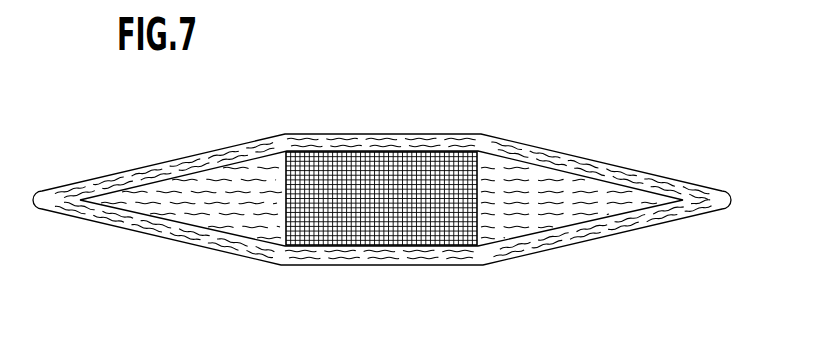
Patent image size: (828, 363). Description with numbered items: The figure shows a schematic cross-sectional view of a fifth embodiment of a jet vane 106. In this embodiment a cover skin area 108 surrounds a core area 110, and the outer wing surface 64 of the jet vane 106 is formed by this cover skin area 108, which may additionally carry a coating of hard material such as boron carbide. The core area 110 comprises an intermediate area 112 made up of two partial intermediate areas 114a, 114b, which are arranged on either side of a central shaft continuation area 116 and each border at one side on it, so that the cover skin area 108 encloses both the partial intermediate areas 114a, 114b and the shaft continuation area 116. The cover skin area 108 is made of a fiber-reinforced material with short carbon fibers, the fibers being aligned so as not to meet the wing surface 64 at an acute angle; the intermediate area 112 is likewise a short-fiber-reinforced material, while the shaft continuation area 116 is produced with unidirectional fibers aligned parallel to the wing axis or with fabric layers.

The jet vane 106 is at (408, 101).
The wing surface 64 is at (100, 181).
The cover skin area 108 is at (647, 182).
The core area 110 is at (485, 238).
The intermediate area 112 is at (166, 239).
The partial intermediate area 114a is at (245, 178).
The partial intermediate area 114b is at (543, 182).
The shaft continuation area 116 is at (392, 232).